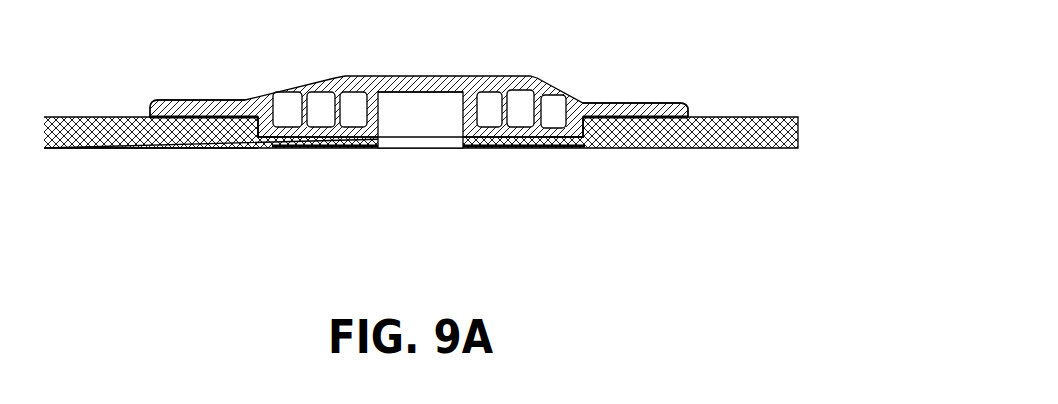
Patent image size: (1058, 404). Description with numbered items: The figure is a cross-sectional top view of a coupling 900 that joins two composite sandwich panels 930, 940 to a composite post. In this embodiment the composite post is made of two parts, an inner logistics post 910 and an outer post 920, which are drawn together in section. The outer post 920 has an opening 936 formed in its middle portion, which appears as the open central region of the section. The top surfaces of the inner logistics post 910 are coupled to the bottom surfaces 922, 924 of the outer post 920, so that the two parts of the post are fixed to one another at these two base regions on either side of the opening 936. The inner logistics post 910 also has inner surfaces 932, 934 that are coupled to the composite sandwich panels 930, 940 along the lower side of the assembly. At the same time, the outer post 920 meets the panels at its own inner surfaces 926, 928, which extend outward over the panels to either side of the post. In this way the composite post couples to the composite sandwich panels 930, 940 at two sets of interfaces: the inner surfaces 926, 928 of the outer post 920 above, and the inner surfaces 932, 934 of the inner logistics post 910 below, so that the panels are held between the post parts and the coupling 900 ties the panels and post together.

The coupling 900 is at (322, 27).
The inner logistics post 910 is at (402, 147).
The outer post 920 is at (477, 80).
The bottom surface of the outer post 922 is at (561, 129).
The bottom surface of the outer post 924 is at (283, 135).
The inner surface of the outer post 926 is at (205, 115).
The inner surface of the outer post 928 is at (662, 113).
The composite sandwich panel 930 is at (80, 148).
The inner surface of the inner logistics post 932 is at (327, 148).
The inner surface of the inner logistics post 934 is at (512, 149).
The opening 936 is at (418, 108).
The composite sandwich panel 940 is at (727, 147).